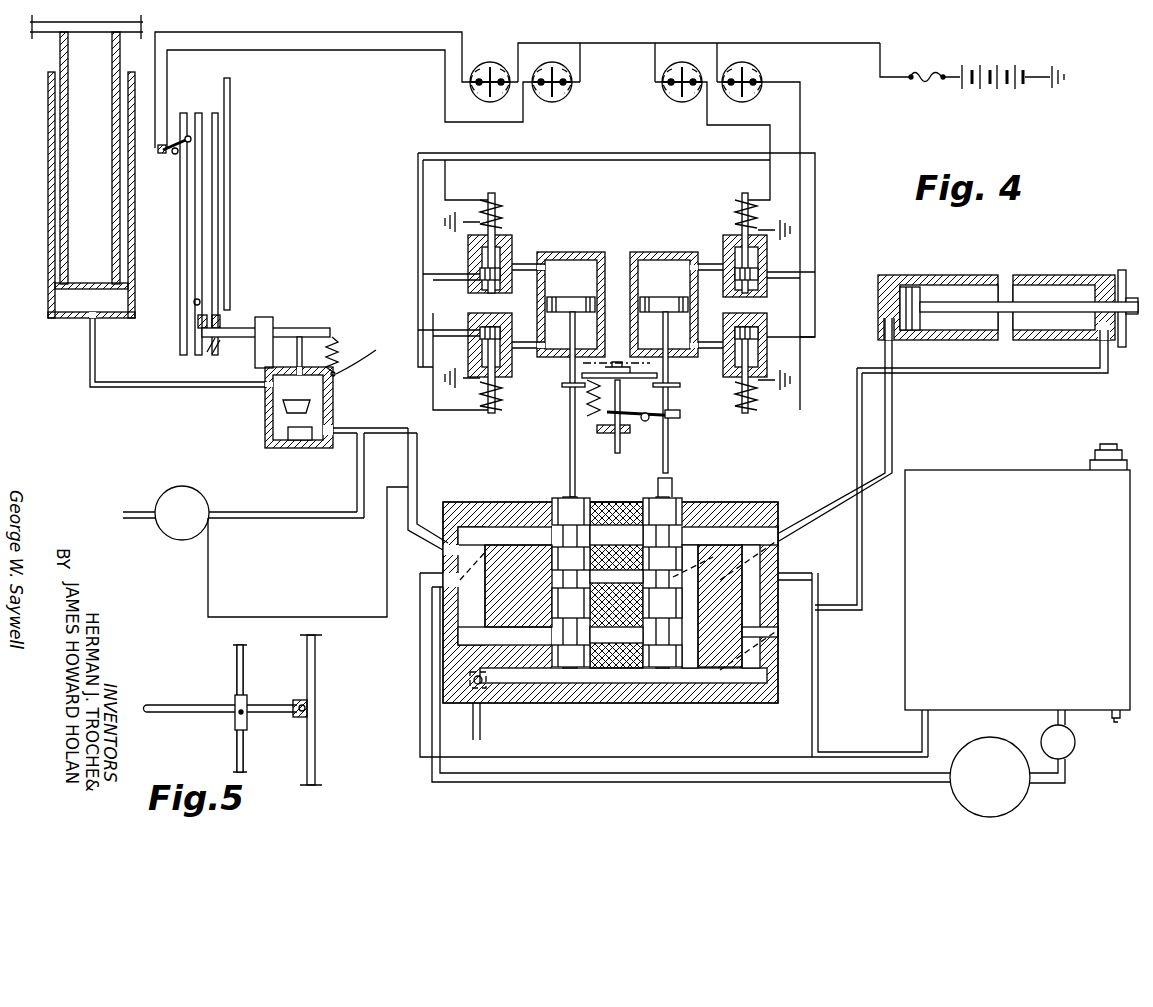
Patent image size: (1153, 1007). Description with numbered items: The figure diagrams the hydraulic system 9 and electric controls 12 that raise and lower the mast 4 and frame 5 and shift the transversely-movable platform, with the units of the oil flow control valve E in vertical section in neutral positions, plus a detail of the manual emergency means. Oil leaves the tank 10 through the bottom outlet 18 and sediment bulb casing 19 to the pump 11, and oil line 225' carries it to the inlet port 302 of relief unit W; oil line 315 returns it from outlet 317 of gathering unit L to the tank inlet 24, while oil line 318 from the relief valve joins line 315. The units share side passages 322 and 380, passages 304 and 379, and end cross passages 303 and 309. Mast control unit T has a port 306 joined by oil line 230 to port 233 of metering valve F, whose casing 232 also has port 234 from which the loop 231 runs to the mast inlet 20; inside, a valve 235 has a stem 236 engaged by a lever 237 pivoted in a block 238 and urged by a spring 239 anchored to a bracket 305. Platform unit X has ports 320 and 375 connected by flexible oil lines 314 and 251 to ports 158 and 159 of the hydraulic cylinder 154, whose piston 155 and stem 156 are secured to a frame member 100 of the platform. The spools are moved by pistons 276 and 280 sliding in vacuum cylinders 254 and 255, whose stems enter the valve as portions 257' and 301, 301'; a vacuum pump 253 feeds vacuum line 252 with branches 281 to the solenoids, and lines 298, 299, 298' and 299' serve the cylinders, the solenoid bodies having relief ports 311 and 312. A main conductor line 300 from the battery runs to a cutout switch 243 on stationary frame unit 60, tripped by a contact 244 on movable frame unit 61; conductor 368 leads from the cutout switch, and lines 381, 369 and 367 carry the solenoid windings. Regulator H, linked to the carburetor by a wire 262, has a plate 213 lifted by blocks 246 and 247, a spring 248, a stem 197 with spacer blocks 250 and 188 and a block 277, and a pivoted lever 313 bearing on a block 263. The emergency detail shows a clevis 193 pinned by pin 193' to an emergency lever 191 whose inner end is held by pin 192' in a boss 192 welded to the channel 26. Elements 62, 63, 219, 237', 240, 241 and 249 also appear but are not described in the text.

In FIG. 4, the mast 4 is at (58, 57).
In FIG. 4, the frame 5 is at (205, 213).
In FIG. 4, the hydraulic system 9 is at (601, 607).
In FIG. 4, the tank 10 is at (1016, 594).
In FIG. 4, the pump 11 is at (993, 745).
In FIG. 4, the electric controls 12 is at (630, 52).
In FIG. 4, the outlet 18 is at (1062, 714).
In FIG. 4, the sediment bulb casing 19 is at (1070, 740).
In FIG. 4, the mast inlet 20 is at (88, 322).
In FIG. 4, the tank inlet 24 is at (923, 708).
In FIG. 5, the channel 26 is at (317, 722).
In FIG. 4, the stationary frame unit 60 is at (183, 200).
In FIG. 4, the movable frame unit 61 is at (203, 230).
In FIG. 4, the rod 62 is at (218, 250).
In FIG. 4, the rod 63 is at (229, 283).
In FIG. 4, the frame member 100 is at (1120, 270).
In FIG. 4, the hydraulic cylinder 154 is at (993, 278).
In FIG. 4, the piston 155 is at (938, 286).
In FIG. 4, the stem 156 is at (936, 300).
In FIG. 4, the port 158 is at (883, 315).
In FIG. 4, the port 159 is at (1107, 343).
In FIG. 4, the second spacer block 188 is at (650, 413).
In FIG. 5, the emergency lever 191 is at (145, 700).
In FIG. 5, the boss 192 is at (282, 718).
In FIG. 5, the pin 192' is at (277, 679).
In FIG. 5, the clevis 193 is at (280, 697).
In FIG. 5, the pin 193' is at (224, 705).
In FIG. 4, the stem 197 is at (627, 437).
In FIG. 4, the plate 213 is at (660, 375).
In FIG. 4, the link 219 is at (598, 362).
In FIG. 4, the oil line 225' is at (691, 698).
In FIG. 4, the oil line 230 is at (417, 468).
In FIG. 4, the oil line 231 is at (114, 388).
In FIG. 4, the casing 232 is at (290, 407).
In FIG. 4, the port 233 is at (320, 449).
In FIG. 4, the port 234 is at (270, 390).
In FIG. 4, the valve 235 is at (287, 430).
In FIG. 4, the stem 236 is at (318, 318).
In FIG. 4, the lever 237 is at (266, 308).
In FIG. 4, the bar end 237' is at (172, 342).
In FIG. 4, the block 238 is at (267, 317).
In FIG. 4, the spring 239 is at (338, 347).
In FIG. 4, the bracket 240 is at (217, 341).
In FIG. 4, the block 241 is at (200, 320).
In FIG. 4, the cutout switch 243 is at (172, 156).
In FIG. 4, the contact 244 is at (205, 313).
In FIG. 4, the block 246 is at (562, 385).
In FIG. 4, the block 247 is at (672, 387).
In FIG. 4, the spring 248 is at (586, 402).
In FIG. 4, the block 249 is at (597, 430).
In FIG. 4, the spacer block 250 is at (613, 435).
In FIG. 4, the oil line 251 is at (858, 404).
In FIG. 4, the vacuum line 252 is at (357, 420).
In FIG. 4, the vacuum pump 253 is at (208, 545).
In FIG. 4, the vacuum cylinder 254 is at (580, 258).
In FIG. 4, the vacuum cylinder 255 is at (658, 247).
In FIG. 4, the stem portion 257' is at (544, 463).
In FIG. 5, the stem portion 257' is at (205, 708).
In FIG. 4, the wire 262 is at (387, 540).
In FIG. 4, the block 263 is at (745, 414).
In FIG. 4, the piston 276 is at (581, 290).
In FIG. 4, the block 277 is at (680, 416).
In FIG. 4, the piston 280 is at (664, 284).
In FIG. 4, the branches 281 is at (460, 281).
In FIG. 4, the vacuum line 298 is at (548, 240).
In FIG. 4, the vacuum line 298' is at (507, 322).
In FIG. 4, the vacuum line 299 is at (701, 244).
In FIG. 4, the vacuum line 299' is at (778, 313).
In FIG. 4, the main conductor line 300 is at (830, 42).
In FIG. 4, the stem 301 is at (684, 397).
In FIG. 4, the stem portion 301' is at (696, 494).
In FIG. 5, the stem portion 301' is at (203, 708).
In FIG. 4, the inlet port 302 is at (460, 580).
In FIG. 4, the end cross passage 303 is at (480, 617).
In FIG. 4, the passage 304 is at (470, 677).
In FIG. 4, the bracket 305 is at (342, 378).
In FIG. 4, the port 306 is at (593, 577).
In FIG. 4, the end cross passage 309 is at (780, 555).
In FIG. 4, the relief ports 311 is at (478, 256).
In FIG. 4, the relief ports 312 is at (472, 330).
In FIG. 4, the pivoted lever 313 is at (664, 428).
In FIG. 4, the oil line 314 is at (890, 452).
In FIG. 4, the oil line 315 is at (818, 707).
In FIG. 4, the outlet 317 is at (787, 577).
In FIG. 4, the oil line 318 is at (674, 665).
In FIG. 4, the port 320 is at (643, 590).
In FIG. 4, the side passage 322 is at (490, 500).
In FIG. 4, the line 367 is at (767, 258).
In FIG. 4, the conductor 368 is at (367, 50).
In FIG. 4, the line 369 is at (731, 126).
In FIG. 4, the port 375 is at (657, 675).
In FIG. 4, the passage 379 is at (658, 492).
In FIG. 4, the side passage 380 is at (538, 680).
In FIG. 4, the branch line 381 is at (546, 153).